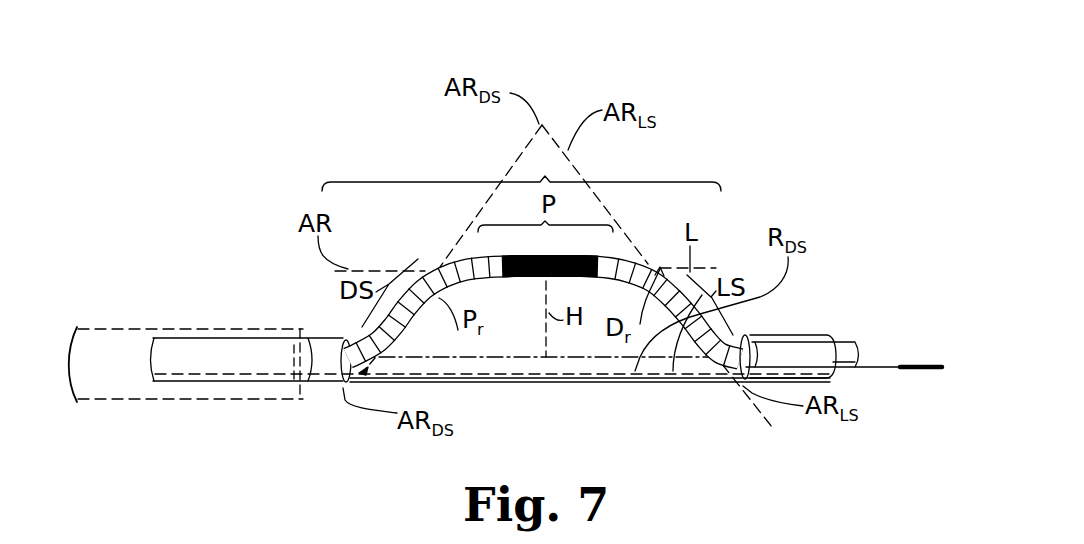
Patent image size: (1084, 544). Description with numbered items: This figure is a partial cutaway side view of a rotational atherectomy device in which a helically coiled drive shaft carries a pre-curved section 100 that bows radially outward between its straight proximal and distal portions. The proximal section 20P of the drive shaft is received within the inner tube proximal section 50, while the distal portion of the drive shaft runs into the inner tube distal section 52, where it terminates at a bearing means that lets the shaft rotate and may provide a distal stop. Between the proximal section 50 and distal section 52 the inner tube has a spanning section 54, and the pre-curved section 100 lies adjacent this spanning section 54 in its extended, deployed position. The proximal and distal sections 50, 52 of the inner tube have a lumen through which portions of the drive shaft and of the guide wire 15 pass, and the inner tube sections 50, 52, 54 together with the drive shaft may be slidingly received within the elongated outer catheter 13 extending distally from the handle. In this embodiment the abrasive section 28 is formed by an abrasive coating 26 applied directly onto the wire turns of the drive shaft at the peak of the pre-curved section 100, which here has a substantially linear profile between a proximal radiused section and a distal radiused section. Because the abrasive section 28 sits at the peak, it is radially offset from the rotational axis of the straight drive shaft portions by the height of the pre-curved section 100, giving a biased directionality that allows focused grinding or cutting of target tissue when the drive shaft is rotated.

The elongated outer catheter 13 is at (143, 330).
The inner tube proximal section 50 is at (240, 360).
The drive shaft proximal section 20P is at (339, 381).
The abrasive coating 26 is at (550, 256).
The abrasive section 28 is at (562, 256).
The inner tube distal section 52 is at (795, 338).
The guide wire 15 is at (857, 358).
The inner tube spanning section 54 is at (640, 382).
The pre-curved section 100 is at (521, 170).